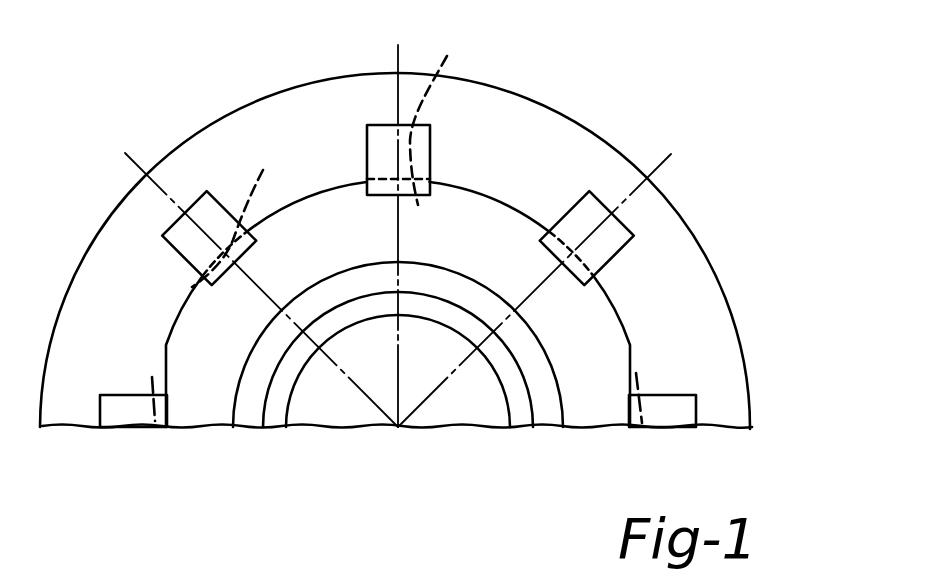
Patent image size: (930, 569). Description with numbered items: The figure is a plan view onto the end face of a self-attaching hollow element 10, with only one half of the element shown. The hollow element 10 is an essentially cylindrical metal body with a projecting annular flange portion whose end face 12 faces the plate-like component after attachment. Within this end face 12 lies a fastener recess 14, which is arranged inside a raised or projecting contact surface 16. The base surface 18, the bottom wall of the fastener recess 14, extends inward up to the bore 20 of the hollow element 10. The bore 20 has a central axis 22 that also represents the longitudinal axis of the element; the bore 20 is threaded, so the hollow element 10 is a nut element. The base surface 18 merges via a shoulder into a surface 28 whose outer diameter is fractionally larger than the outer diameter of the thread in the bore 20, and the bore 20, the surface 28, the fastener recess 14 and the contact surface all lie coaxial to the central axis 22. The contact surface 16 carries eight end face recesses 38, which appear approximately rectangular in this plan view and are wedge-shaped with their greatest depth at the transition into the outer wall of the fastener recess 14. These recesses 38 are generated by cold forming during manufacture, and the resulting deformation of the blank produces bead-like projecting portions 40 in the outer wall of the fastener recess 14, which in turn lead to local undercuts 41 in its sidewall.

The self-attaching hollow element 10 is at (724, 276).
The end face 12 is at (123, 232).
The fastener recess 14 is at (193, 402).
The contact surface 16 is at (492, 128).
The base surface 18 is at (585, 397).
The bore 20 is at (297, 383).
The central axis 22 is at (400, 429).
The surface 28 is at (398, 303).
The end face recesses 38 is at (120, 408).
The projecting portions 40 is at (172, 414).
The undercuts 41 is at (397, 223).